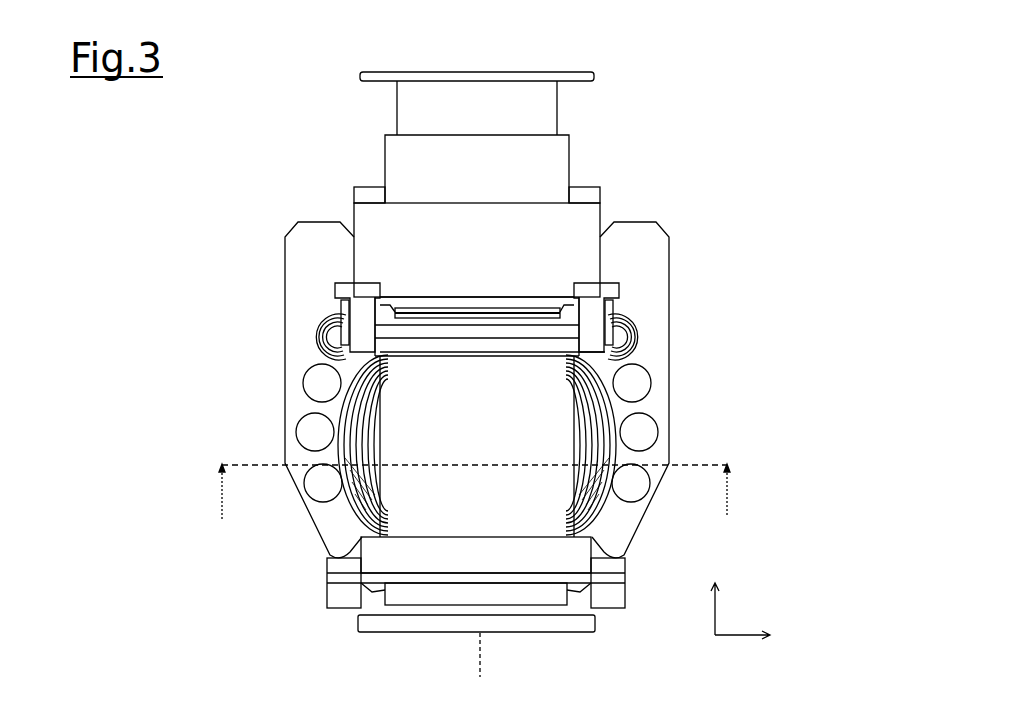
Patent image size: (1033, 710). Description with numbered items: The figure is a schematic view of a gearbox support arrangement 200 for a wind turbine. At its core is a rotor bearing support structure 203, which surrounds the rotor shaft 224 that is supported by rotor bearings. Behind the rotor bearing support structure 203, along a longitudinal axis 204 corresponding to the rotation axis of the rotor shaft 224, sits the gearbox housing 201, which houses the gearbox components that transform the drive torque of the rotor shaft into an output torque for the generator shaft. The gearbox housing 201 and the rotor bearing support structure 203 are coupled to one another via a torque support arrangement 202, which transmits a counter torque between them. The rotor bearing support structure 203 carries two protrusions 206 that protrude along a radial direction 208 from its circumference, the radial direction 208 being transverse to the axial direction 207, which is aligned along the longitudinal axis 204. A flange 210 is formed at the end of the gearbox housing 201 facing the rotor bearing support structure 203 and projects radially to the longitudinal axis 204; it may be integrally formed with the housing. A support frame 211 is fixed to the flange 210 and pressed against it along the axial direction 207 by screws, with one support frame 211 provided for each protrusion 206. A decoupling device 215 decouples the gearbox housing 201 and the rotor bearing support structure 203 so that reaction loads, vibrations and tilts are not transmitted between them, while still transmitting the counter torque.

The gearbox support arrangement 200 is at (672, 188).
The gearbox housing 201 is at (388, 247).
The torque support arrangement 202 is at (325, 278).
The rotor bearing support structure 203 is at (410, 497).
The longitudinal axis 204 is at (480, 655).
The protrusion 206 is at (327, 313).
The axial direction 207 is at (713, 612).
The radial direction 208 is at (728, 638).
The flange 210 is at (358, 290).
The support frame 211 is at (330, 353).
The decoupling device 215 is at (323, 325).
The rotor shaft 224 is at (355, 630).